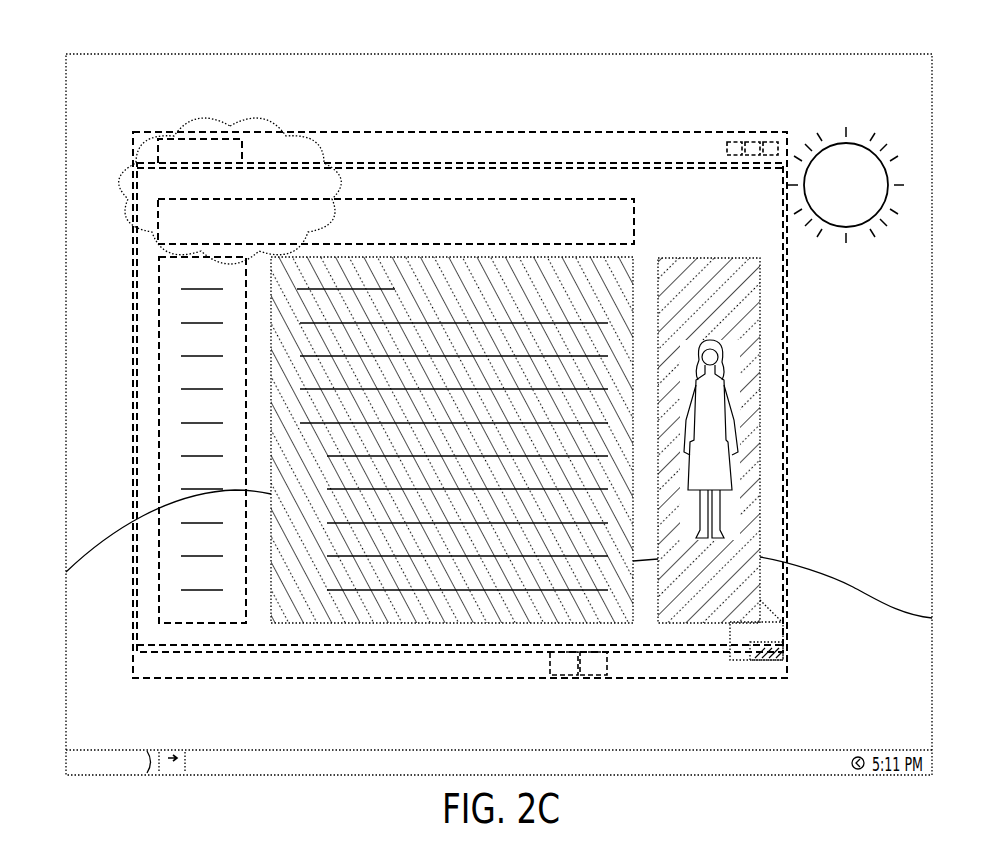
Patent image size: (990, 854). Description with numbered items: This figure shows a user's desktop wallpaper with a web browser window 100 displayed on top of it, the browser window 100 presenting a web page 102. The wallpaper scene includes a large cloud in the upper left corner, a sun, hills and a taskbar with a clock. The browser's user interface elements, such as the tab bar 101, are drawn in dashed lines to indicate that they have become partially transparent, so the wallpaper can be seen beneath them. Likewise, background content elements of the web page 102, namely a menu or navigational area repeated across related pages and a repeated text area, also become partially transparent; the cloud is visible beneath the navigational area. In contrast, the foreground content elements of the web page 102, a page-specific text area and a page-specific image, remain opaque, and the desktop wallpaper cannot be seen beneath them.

The web browser window 100 is at (138, 120).
The tab bar area 101 is at (132, 139).
The web page 102 is at (137, 244).